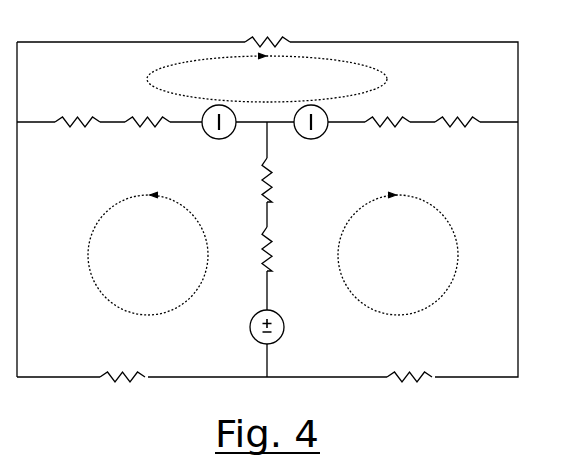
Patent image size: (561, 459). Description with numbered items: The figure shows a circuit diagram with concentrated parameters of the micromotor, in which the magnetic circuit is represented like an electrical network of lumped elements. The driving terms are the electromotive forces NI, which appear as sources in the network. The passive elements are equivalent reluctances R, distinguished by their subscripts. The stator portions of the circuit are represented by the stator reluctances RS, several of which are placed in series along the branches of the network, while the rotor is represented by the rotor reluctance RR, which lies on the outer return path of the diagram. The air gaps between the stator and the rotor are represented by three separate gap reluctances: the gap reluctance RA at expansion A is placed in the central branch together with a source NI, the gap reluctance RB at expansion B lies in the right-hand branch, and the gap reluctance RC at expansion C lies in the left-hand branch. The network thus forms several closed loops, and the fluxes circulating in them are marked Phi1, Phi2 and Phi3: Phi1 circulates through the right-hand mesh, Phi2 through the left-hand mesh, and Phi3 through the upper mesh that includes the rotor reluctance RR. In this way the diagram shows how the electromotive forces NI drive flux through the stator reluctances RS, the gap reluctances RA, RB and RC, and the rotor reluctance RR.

The equivalent reluctance of the rotor RR is at (272, 28).
The equivalent reluctance in the gap at expansion C RC is at (77, 109).
The equivalent reluctance in the gap at expansion B RB is at (457, 109).
The equivalent reluctance of the stator RS is at (266, 249).
The equivalent reluctance in the gap at expansion A RA is at (252, 249).
The electromotive force NI is at (272, 230).
The flux loop 1 Phi1 is at (398, 253).
The flux loop 2 Phi2 is at (148, 253).
The flux loop 3 Phi3 is at (267, 77).